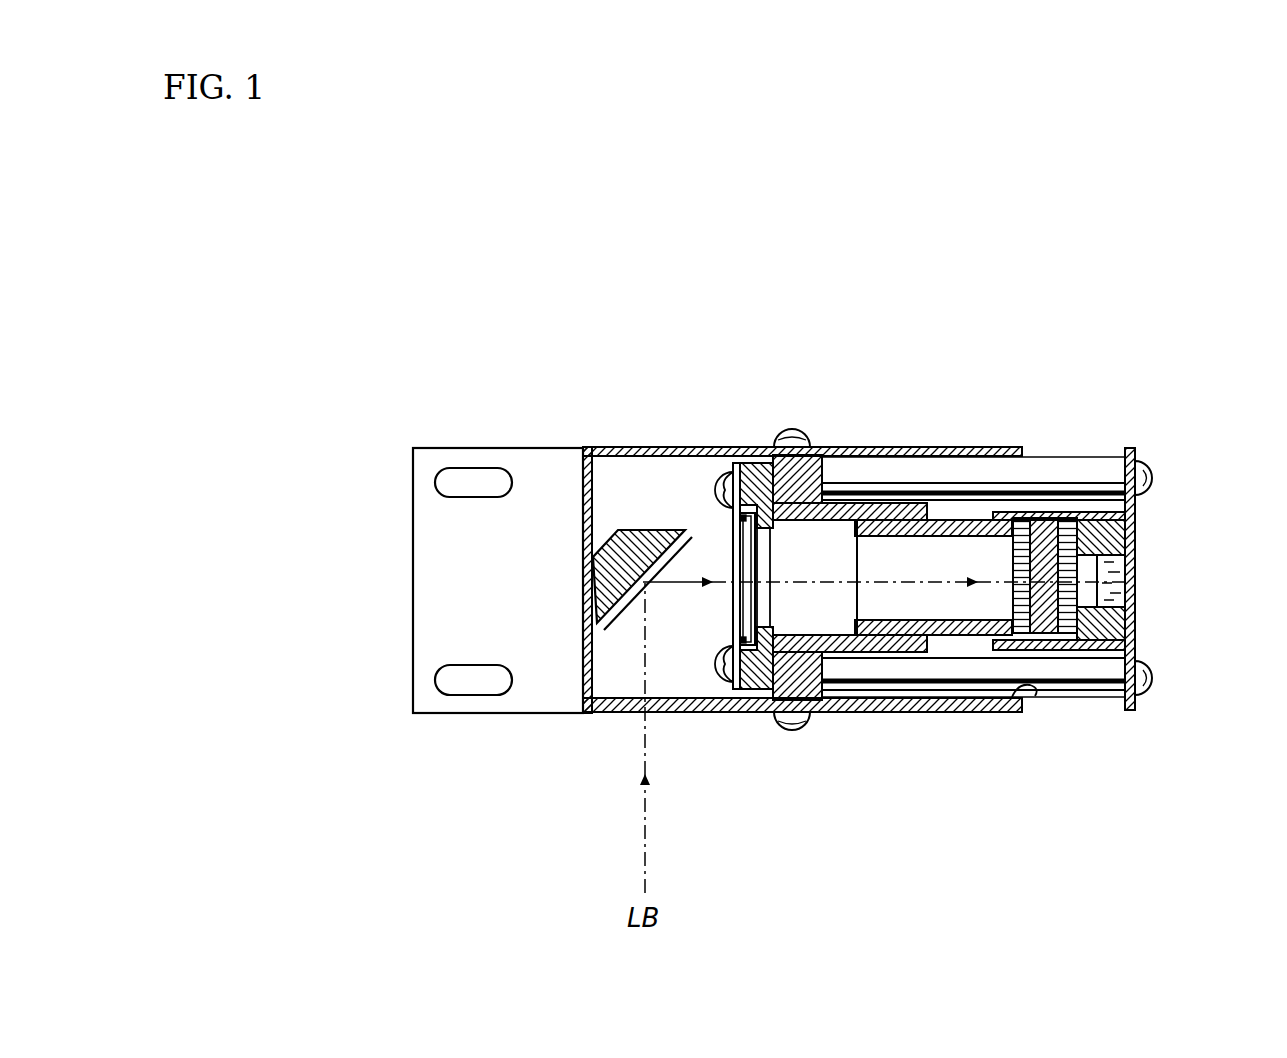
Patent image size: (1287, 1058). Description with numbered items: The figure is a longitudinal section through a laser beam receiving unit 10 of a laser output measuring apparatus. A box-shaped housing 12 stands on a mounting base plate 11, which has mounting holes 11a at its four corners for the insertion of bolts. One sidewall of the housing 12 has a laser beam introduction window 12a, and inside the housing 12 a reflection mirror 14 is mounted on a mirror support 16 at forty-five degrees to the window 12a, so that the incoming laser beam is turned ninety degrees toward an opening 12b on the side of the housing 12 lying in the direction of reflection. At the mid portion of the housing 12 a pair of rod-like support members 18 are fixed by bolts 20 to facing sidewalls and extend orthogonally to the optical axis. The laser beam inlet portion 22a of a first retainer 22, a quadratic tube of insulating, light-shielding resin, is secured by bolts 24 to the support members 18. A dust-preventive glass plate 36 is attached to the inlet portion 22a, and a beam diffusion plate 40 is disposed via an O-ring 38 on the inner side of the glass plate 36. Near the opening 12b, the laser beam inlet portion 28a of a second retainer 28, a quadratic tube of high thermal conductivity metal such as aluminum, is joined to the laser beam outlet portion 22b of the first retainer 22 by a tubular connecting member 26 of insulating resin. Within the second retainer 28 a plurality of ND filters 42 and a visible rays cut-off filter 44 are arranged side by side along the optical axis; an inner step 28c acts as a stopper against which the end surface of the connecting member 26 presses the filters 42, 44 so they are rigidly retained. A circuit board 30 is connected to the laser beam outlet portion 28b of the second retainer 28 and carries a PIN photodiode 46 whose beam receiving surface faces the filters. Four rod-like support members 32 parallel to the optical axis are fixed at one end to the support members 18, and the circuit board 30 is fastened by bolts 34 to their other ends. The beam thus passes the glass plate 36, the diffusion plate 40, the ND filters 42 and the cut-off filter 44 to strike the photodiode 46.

The laser beam receiving unit 10 is at (448, 430).
The mounting base plate 11 is at (508, 448).
The mounting holes 11a is at (460, 690).
The housing 12 is at (583, 540).
The laser beam introduction window 12a is at (620, 712).
The opening 12b is at (1033, 695).
The reflection mirror 14 is at (582, 703).
The mirror support 16 is at (598, 583).
The rod-like support members 18 is at (790, 455).
The bolts 20 is at (800, 430).
The first retainer 22 is at (863, 490).
The laser beam inlet portion 22a is at (760, 463).
The laser beam outlet portion 22b is at (930, 497).
The bolts 24 is at (755, 462).
The connecting member 26 is at (950, 645).
The second retainer 28 is at (1088, 640).
The laser beam inlet portion 28a is at (993, 512).
The laser beam outlet portion 28b is at (1125, 600).
The step 28c is at (1060, 640).
The circuit board 30 is at (1137, 528).
The rod-like support members 32 is at (1100, 467).
The bolts 34 is at (1153, 462).
The dust-preventive glass plate 36 is at (733, 530).
The O-ring 38 is at (733, 510).
The beam diffusion plate 40 is at (733, 603).
The ND filters 42 is at (1037, 518).
The visible rays cut-off filter 44 is at (1060, 518).
The PIN photodiode 46 is at (1113, 582).